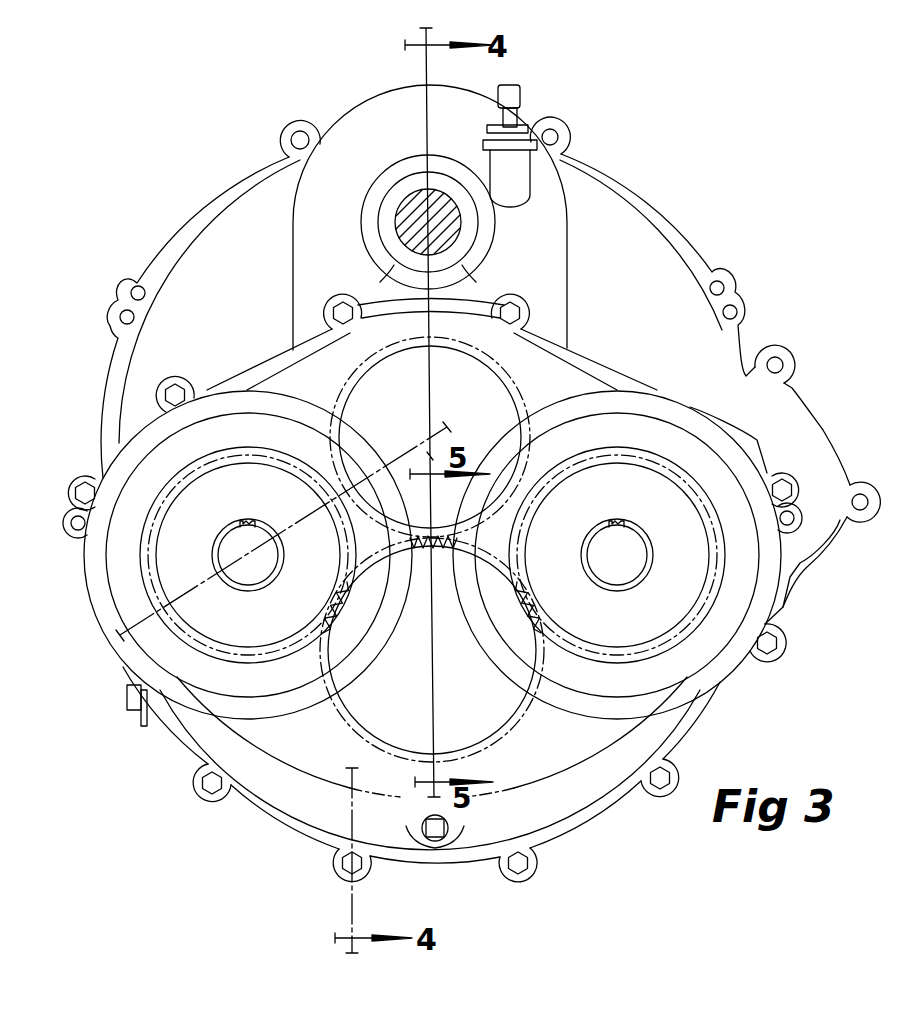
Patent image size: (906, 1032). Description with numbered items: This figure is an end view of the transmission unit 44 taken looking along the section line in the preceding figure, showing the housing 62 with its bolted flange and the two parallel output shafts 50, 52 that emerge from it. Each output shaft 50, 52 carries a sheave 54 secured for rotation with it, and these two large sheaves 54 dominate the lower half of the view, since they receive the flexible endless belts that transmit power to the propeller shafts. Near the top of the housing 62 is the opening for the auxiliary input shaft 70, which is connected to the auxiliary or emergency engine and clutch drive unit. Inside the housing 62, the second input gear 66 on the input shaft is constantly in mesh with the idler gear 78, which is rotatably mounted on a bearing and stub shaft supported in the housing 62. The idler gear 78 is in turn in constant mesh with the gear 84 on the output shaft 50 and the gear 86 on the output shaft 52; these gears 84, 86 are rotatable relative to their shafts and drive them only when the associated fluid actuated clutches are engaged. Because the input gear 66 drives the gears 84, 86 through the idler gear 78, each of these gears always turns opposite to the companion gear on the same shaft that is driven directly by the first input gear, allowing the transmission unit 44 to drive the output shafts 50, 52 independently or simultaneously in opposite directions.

The transmission unit 44 is at (660, 182).
The housing 62 is at (672, 278).
The auxiliary input shaft 70 is at (395, 222).
The second input gear 66 is at (540, 452).
The idler gear 78 is at (490, 745).
The sheave 54 is at (125, 590).
The gear 84 is at (350, 541).
The gear 86 is at (528, 568).
The output shaft 50 is at (228, 556).
The output shaft 52 is at (638, 553).